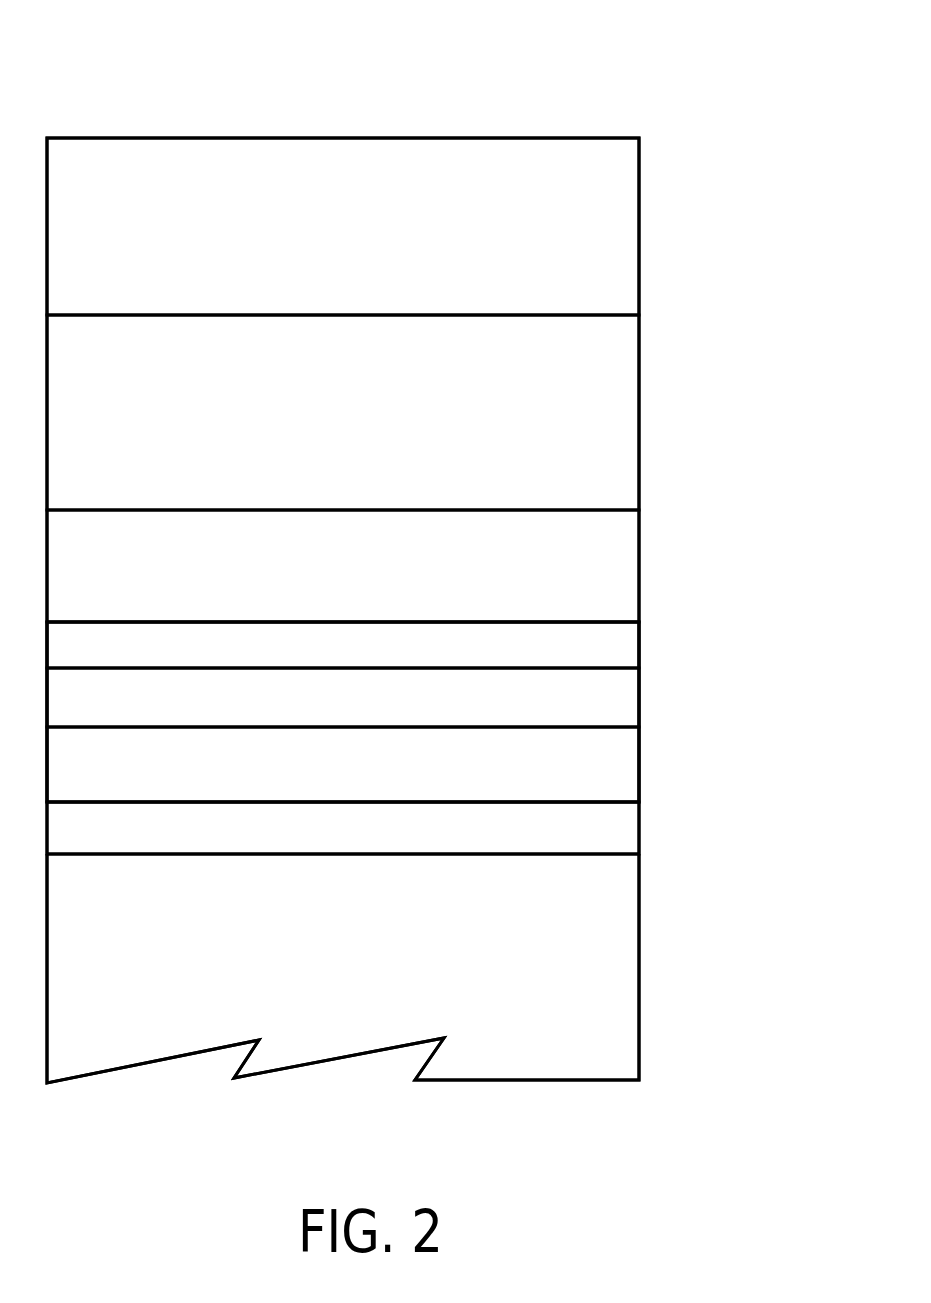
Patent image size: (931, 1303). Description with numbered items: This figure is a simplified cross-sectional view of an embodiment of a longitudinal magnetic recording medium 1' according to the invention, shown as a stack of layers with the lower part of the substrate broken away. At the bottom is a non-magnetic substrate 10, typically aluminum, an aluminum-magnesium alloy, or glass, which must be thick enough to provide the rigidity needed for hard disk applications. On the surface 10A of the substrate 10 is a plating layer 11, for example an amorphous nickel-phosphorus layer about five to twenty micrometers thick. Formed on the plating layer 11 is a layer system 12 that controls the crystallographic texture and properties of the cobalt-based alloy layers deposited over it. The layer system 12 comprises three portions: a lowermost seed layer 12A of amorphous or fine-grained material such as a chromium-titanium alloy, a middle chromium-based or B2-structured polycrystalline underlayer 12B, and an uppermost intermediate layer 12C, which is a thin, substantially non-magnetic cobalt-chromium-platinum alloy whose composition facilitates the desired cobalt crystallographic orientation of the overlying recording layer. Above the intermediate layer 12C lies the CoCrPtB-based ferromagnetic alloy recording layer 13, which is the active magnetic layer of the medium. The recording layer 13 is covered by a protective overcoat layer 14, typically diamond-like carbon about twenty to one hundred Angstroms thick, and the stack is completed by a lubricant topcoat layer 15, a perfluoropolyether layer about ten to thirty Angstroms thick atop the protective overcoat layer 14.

The magnetic recording medium 1' is at (343, 541).
The lubricant topcoat layer 15 is at (641, 224).
The protective overcoat layer 14 is at (641, 406).
The ferromagnetic alloy recording layer 13 is at (641, 579).
The layer system 12 is at (784, 621).
The intermediate layer 12C is at (641, 643).
The underlayer 12B is at (641, 698).
The seed layer 12A is at (641, 757).
The plating layer 11 is at (641, 828).
The surface 10A is at (587, 857).
The non-magnetic substrate 10 is at (641, 976).